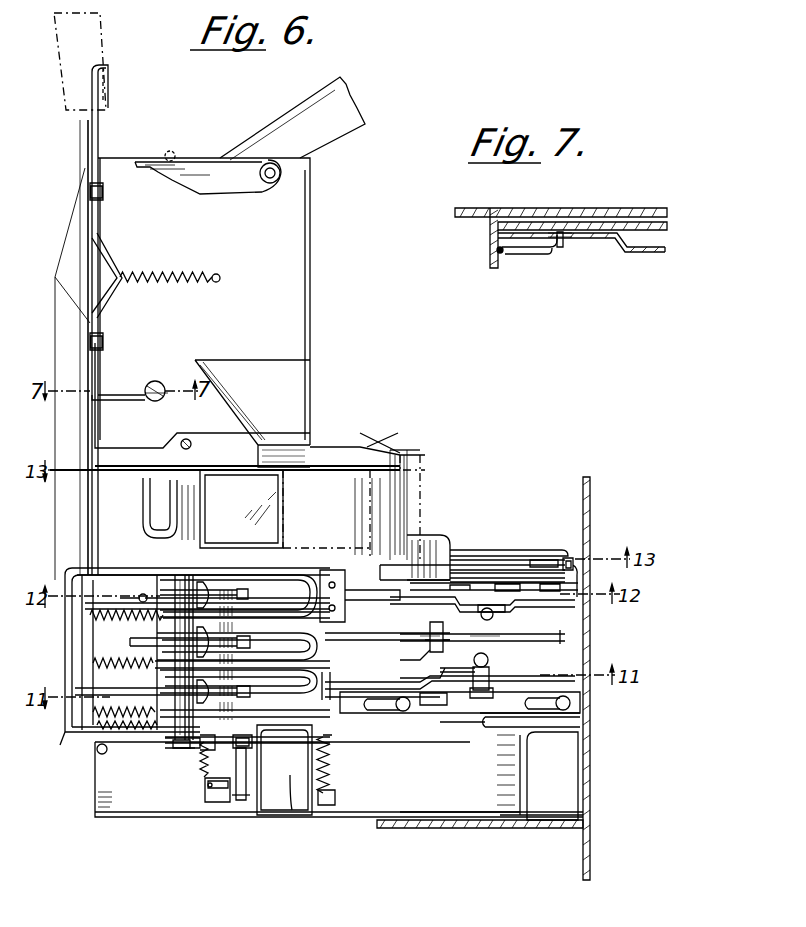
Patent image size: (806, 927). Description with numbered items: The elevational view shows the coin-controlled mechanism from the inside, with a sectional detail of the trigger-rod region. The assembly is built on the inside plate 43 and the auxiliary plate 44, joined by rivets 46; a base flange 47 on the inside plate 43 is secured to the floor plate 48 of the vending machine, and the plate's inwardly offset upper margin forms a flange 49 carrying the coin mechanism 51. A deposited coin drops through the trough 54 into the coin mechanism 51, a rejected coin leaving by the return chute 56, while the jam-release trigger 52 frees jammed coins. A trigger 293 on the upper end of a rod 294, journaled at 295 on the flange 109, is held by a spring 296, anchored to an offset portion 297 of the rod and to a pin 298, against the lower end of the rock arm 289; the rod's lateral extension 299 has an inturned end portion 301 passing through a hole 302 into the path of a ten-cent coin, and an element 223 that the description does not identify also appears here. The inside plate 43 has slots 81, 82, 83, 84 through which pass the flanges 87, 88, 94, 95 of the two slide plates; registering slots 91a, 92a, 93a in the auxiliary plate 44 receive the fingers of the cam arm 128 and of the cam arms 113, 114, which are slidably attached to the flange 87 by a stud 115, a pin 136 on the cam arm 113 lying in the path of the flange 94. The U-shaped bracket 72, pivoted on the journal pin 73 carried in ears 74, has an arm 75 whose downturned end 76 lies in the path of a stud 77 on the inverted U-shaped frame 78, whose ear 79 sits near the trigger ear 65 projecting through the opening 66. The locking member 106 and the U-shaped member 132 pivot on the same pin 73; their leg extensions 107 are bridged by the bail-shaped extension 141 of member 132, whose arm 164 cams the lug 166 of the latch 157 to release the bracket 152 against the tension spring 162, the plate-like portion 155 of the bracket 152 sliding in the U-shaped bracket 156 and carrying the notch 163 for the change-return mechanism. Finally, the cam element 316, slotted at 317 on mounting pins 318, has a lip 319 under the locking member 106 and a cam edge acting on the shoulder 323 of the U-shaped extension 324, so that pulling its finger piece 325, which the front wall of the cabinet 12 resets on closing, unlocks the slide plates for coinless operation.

In FIG. 6, the rock arm 289 is at (112, 27).
In FIG. 6, the trigger 293 is at (108, 66).
In FIG. 6, the rod 294 is at (100, 140).
In FIG. 7, the rod 294 is at (503, 258).
In FIG. 6, the journal 295 is at (90, 192).
In FIG. 6, the spring 296 is at (155, 275).
In FIG. 6, the offset portion 297 is at (110, 300).
In FIG. 6, the pin 298 is at (220, 282).
In FIG. 6, the lateral extension 299 is at (115, 393).
In FIG. 7, the lateral extension 299 is at (532, 258).
In FIG. 6, the inturned end portion 301 is at (160, 405).
In FIG. 7, the inturned end portion 301 is at (562, 250).
In FIG. 6, the hole 302 is at (160, 385).
In FIG. 7, the hole 302 is at (565, 247).
In FIG. 6, the pin 223 is at (170, 150).
In FIG. 6, the trigger 52 is at (198, 165).
In FIG. 6, the trough 54 is at (332, 135).
In FIG. 6, the coin mechanism 51 is at (314, 284).
In FIG. 7, the coin mechanism 51 is at (685, 220).
In FIG. 6, the return chute 56 is at (300, 362).
In FIG. 7, the return chute 56 is at (660, 255).
In FIG. 6, the flange 109 is at (90, 445).
In FIG. 7, the flange 109 is at (488, 265).
In FIG. 6, the flange 49 is at (330, 445).
In FIG. 6, the auxiliary plate 44 is at (395, 462).
In FIG. 6, the U-shaped bracket 156 is at (285, 490).
In FIG. 6, the plate-like portion 155 is at (331, 515).
In FIG. 6, the notch 163 is at (160, 517).
In FIG. 6, the leg extension 107 is at (90, 620).
In FIG. 6, the rivets 46 is at (92, 545).
In FIG. 6, the ears 74 is at (100, 560).
In FIG. 6, the bail-shaped extension 141 is at (65, 740).
In FIG. 6, the registering slot 93a is at (160, 692).
In FIG. 6, the registering slot 91a is at (143, 594).
In FIG. 6, the registering slot 92a is at (130, 640).
In FIG. 6, the cam arm 128 is at (270, 595).
In FIG. 6, the U-shaped member 132 is at (330, 585).
In FIG. 6, the slot 82 is at (345, 645).
In FIG. 6, the flange 94 is at (480, 640).
In FIG. 6, the slot 81 is at (360, 662).
In FIG. 6, the U-shaped extension 324 is at (346, 676).
In FIG. 6, the upstanding pin 136 is at (421, 635).
In FIG. 6, the cam arm 113 is at (490, 657).
In FIG. 6, the stud 115 is at (490, 672).
In FIG. 6, the bracket 152 is at (424, 526).
In FIG. 6, the slot 83 is at (420, 545).
In FIG. 6, the slot 84 is at (435, 565).
In FIG. 6, the arm 164 is at (500, 550).
In FIG. 6, the tension spring 162 is at (510, 560).
In FIG. 6, the latch 157 is at (530, 560).
In FIG. 6, the lug 166 is at (580, 555).
In FIG. 6, the flange 88 is at (470, 600).
In FIG. 6, the flange 95 is at (580, 580).
In FIG. 6, the cabinet 12 is at (592, 485).
In FIG. 6, the mounting pins 318 is at (582, 700).
In FIG. 6, the finger piece 325 is at (582, 712).
In FIG. 6, the slot 317 is at (545, 722).
In FIG. 6, the cam arm 114 is at (470, 712).
In FIG. 6, the cam element 316 is at (500, 732).
In FIG. 6, the flange 87 is at (490, 735).
In FIG. 6, the floor plate 48 is at (480, 830).
In FIG. 6, the base flange 47 is at (432, 818).
In FIG. 6, the inside plate 43 is at (497, 790).
In FIG. 6, the lip 319 is at (284, 770).
In FIG. 6, the shoulder 323 is at (330, 730).
In FIG. 6, the downturned end 76 is at (248, 755).
In FIG. 6, the stud 77 is at (240, 800).
In FIG. 6, the opening 66 is at (205, 800).
In FIG. 6, the ear 65 is at (215, 790).
In FIG. 6, the ear 79 is at (245, 800).
In FIG. 6, the frame 78 is at (295, 780).
In FIG. 6, the locking member 106 is at (219, 759).
In FIG. 6, the U-shaped bracket 72 is at (145, 742).
In FIG. 6, the journal pin 73 is at (175, 742).
In FIG. 6, the arm 75 is at (190, 748).